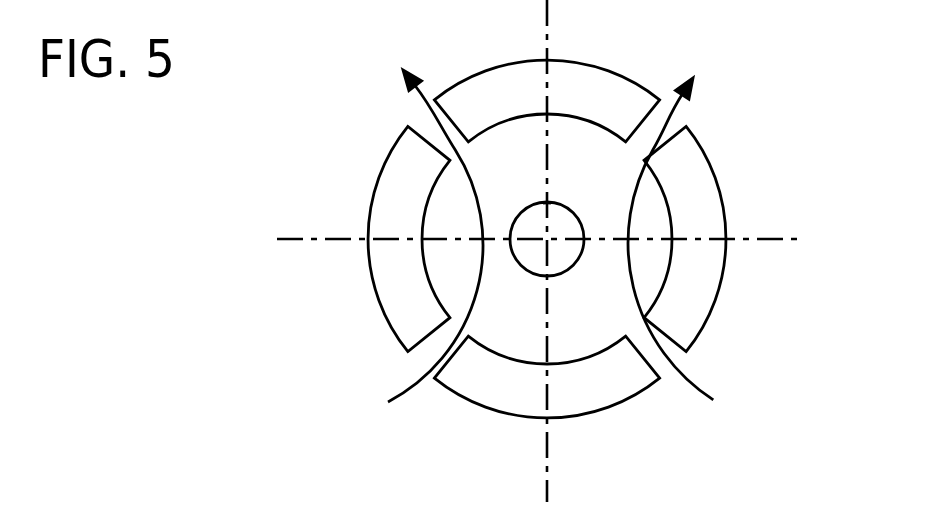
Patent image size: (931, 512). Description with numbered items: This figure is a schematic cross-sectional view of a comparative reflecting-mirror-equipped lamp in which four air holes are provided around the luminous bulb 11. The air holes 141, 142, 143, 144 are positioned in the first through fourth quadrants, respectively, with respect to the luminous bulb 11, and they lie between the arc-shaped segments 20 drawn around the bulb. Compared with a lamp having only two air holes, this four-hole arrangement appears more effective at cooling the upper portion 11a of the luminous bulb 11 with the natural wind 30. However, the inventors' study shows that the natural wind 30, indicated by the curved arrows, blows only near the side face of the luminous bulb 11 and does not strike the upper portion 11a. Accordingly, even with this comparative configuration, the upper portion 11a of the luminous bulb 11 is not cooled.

The luminous bulb 11 is at (525, 249).
The upper portion of the luminous bulb 11a is at (548, 203).
The magnetic pole piece 20 is at (500, 390).
The natural wind 30 is at (400, 400).
The air hole 141 is at (687, 113).
The air hole 142 is at (408, 115).
The air hole 143 is at (408, 361).
The air hole 144 is at (679, 362).